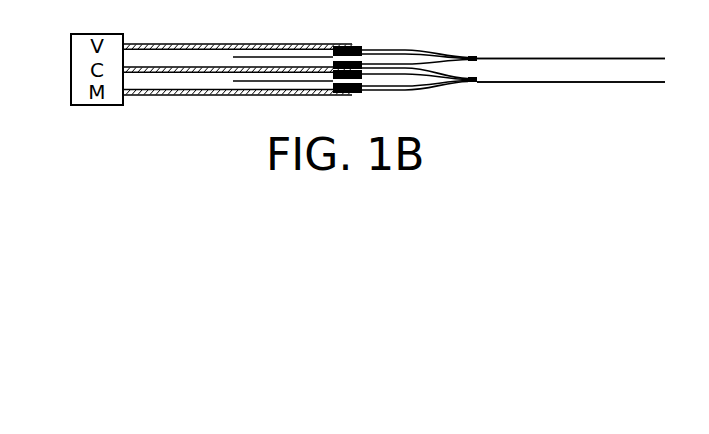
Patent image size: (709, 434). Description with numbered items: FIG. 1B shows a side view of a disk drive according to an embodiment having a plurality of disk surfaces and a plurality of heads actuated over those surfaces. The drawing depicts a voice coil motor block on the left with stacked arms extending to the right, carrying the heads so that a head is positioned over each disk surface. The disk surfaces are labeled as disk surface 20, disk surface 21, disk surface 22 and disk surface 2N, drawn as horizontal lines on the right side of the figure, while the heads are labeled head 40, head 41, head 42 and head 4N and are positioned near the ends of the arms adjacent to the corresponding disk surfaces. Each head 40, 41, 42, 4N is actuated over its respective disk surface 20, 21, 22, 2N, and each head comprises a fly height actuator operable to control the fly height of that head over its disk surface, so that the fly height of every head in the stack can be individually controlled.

The disk surface 20 is at (581, 57).
The disk surface 21 is at (600, 59).
The disk surface 22 is at (581, 81).
The disk surface 2N is at (600, 83).
The head 40 is at (476, 56).
The head 41 is at (481, 58).
The head 42 is at (481, 80).
The head 4N is at (478, 83).